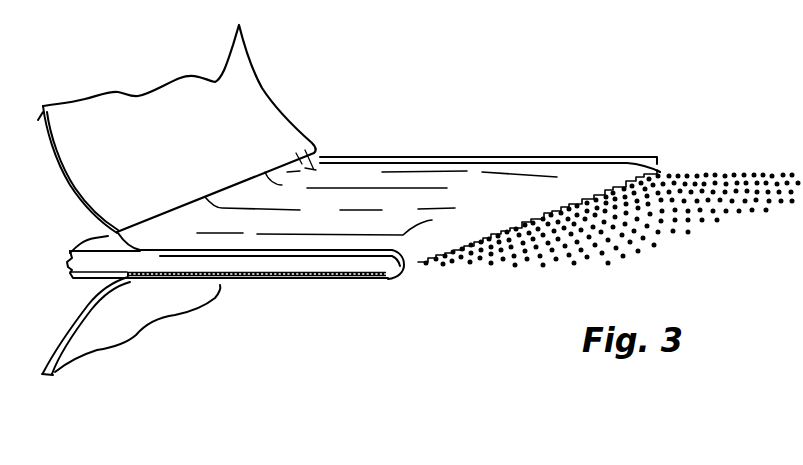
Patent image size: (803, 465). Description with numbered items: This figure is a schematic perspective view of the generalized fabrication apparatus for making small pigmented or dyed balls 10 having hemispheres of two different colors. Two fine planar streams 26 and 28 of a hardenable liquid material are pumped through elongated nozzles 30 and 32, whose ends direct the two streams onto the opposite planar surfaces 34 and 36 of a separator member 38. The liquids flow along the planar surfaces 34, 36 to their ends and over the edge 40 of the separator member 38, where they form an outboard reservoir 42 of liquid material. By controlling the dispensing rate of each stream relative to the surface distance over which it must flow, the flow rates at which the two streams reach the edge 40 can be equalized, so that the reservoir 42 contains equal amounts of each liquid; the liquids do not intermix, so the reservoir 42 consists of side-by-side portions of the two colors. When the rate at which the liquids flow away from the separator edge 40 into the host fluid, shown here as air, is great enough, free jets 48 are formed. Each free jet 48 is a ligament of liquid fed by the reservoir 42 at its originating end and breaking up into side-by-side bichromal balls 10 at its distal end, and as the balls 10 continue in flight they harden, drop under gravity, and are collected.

The balls 10 is at (732, 172).
The planar stream 26 is at (318, 160).
The planar stream 28 is at (131, 279).
The elongated nozzle 30 is at (248, 98).
The elongated nozzle 32 is at (82, 316).
The planar surface 34 is at (276, 252).
The planar surface 36 is at (273, 279).
The separator member 38 is at (338, 258).
The edge 40 is at (369, 277).
The outboard reservoir 42 is at (356, 221).
The free jets 48 is at (403, 264).